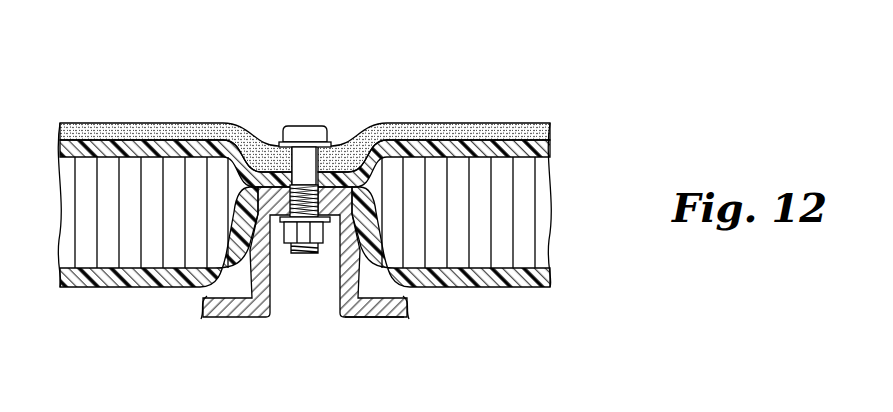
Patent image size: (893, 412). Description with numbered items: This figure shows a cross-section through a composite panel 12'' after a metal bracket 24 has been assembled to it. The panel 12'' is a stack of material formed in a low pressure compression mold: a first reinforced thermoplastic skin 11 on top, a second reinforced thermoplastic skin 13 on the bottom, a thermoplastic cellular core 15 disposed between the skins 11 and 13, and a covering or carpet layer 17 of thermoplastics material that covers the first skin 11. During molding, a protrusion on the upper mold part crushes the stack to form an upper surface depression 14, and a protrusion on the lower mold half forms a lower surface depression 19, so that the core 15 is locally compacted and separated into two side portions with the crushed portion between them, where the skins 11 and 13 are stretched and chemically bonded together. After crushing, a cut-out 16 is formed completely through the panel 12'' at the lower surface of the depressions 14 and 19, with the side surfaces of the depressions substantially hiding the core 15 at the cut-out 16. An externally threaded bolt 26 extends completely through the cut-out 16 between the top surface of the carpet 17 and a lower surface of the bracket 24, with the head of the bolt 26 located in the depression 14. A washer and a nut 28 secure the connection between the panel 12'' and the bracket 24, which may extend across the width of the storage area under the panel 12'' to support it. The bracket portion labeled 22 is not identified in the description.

The first reinforced thermoplastic skin 11 is at (548, 152).
The composite panel 12'' is at (352, 200).
The second reinforced thermoplastic skin 13 is at (555, 280).
The upper surface depression 14 is at (345, 135).
The thermoplastic cellular core 15 is at (547, 247).
The cut-out 16 is at (308, 178).
The carpet layer 17 is at (551, 128).
The lower surface depression 19 is at (398, 284).
The left mounting bracket 22 is at (228, 280).
The metal bracket 24 is at (370, 318).
The externally threaded bolt 26 is at (302, 125).
The nut 28 is at (288, 233).